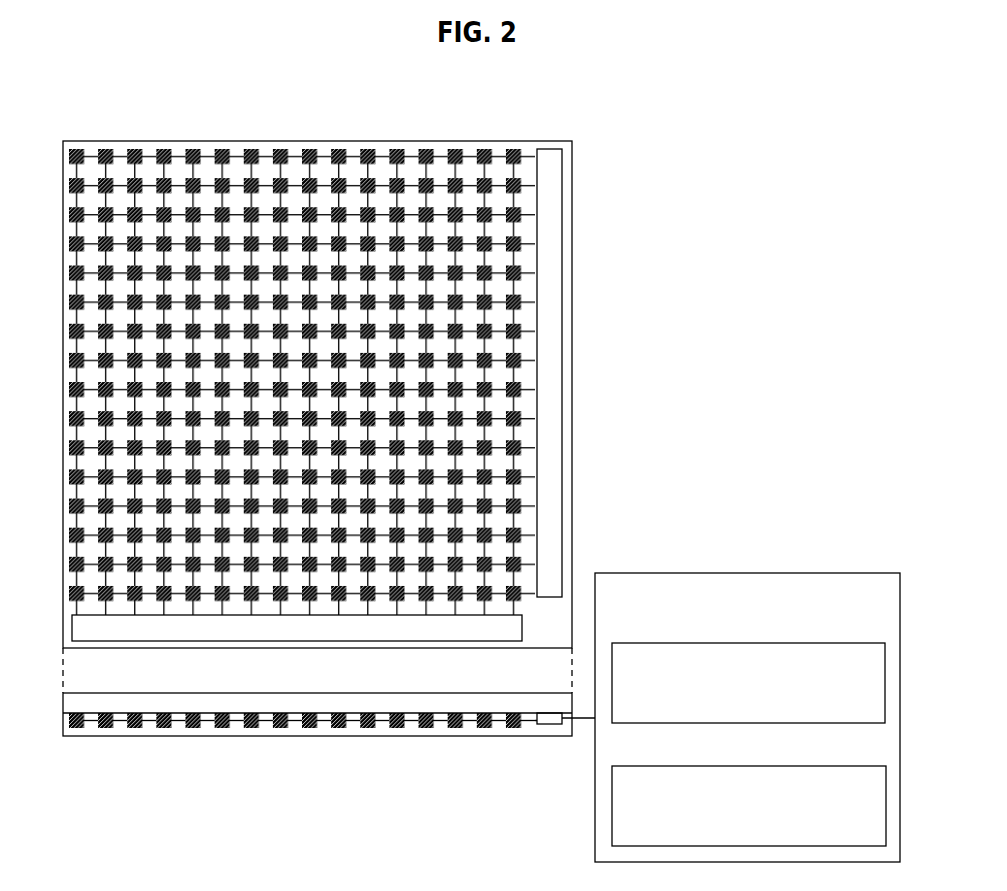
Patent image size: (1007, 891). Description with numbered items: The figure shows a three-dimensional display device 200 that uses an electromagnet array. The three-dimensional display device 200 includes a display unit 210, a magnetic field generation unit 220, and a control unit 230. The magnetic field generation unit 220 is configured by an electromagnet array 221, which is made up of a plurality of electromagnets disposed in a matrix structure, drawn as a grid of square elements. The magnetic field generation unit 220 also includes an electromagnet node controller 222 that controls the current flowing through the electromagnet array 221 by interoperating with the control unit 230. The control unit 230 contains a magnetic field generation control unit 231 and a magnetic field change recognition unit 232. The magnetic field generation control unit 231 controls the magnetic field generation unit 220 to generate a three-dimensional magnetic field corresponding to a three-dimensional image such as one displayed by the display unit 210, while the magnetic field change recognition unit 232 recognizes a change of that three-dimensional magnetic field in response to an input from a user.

The 3D display device 200 is at (339, 112).
The display unit 210 is at (230, 702).
The magnetic field generation unit 220 is at (135, 737).
The electromagnet array 221 is at (460, 185).
The electromagnet node controller 222 is at (562, 258).
The control unit 230 is at (745, 573).
The magnetic field generation control unit 231 is at (798, 643).
The magnetic field change recognition unit 232 is at (798, 766).